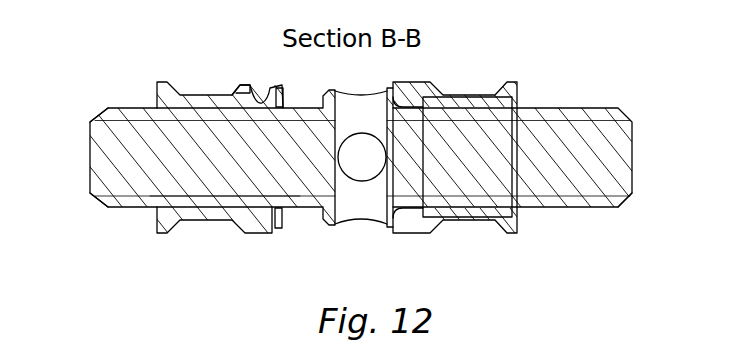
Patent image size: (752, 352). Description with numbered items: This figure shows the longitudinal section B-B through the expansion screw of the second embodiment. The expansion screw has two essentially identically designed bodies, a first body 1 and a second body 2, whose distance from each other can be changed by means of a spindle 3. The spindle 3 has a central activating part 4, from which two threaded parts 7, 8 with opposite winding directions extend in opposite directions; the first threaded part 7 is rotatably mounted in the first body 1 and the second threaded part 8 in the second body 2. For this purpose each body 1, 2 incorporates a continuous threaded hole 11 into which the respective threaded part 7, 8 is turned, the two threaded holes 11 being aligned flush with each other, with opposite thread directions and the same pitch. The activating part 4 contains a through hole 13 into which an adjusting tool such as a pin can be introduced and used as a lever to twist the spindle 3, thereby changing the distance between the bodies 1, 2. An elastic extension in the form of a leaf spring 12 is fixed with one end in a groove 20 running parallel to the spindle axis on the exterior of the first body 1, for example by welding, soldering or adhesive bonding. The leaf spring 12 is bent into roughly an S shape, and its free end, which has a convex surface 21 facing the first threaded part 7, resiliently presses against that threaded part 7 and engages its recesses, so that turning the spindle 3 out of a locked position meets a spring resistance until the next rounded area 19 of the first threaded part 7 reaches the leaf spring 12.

The first body 1 is at (168, 95).
The second body 2 is at (515, 85).
The spindle 3 is at (592, 130).
The activating part 4 is at (375, 210).
The first threaded part 7 is at (103, 178).
The second threaded part 8 is at (607, 207).
The threaded hole 11 is at (205, 197).
The leaf spring 12 is at (252, 87).
The through hole 13 is at (360, 168).
The rounded area 19 is at (125, 112).
The groove 20 is at (286, 81).
The convex surface 21 is at (279, 92).